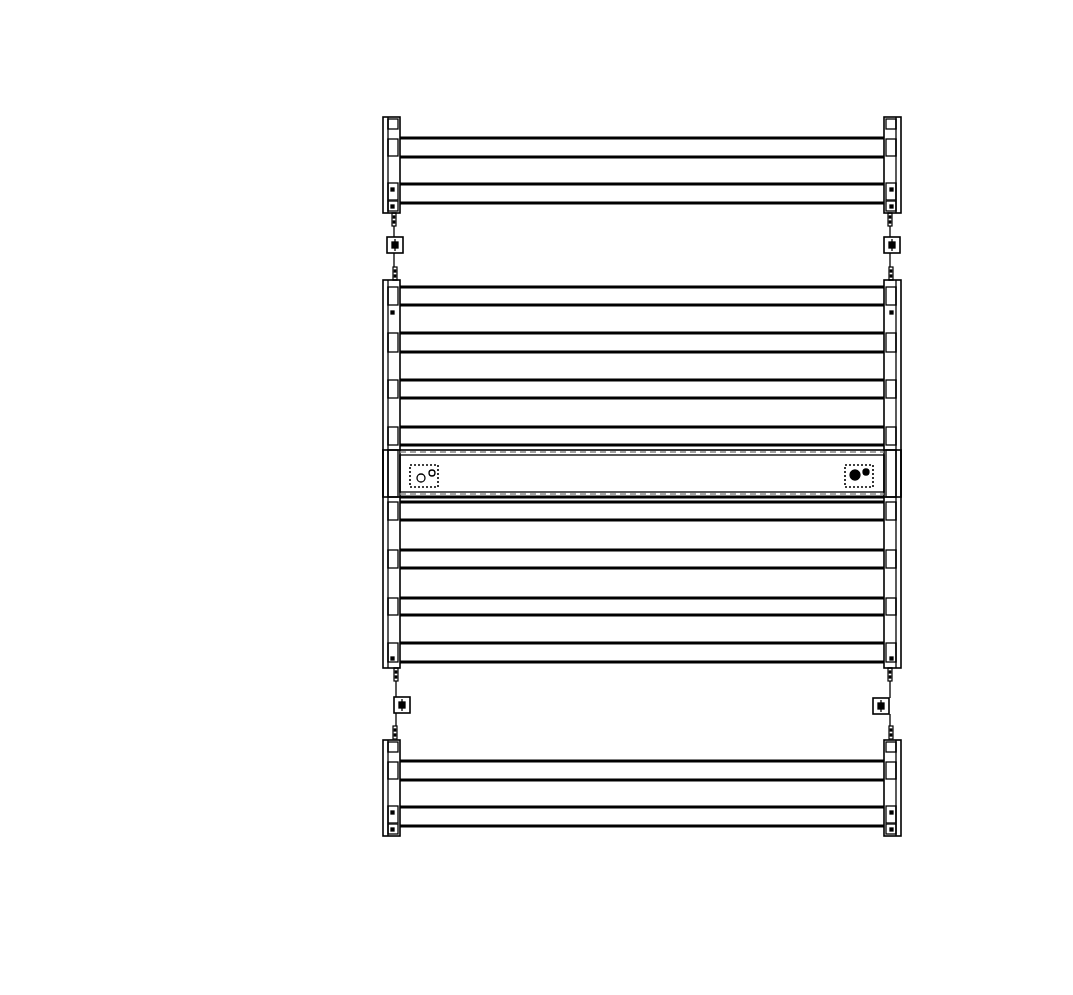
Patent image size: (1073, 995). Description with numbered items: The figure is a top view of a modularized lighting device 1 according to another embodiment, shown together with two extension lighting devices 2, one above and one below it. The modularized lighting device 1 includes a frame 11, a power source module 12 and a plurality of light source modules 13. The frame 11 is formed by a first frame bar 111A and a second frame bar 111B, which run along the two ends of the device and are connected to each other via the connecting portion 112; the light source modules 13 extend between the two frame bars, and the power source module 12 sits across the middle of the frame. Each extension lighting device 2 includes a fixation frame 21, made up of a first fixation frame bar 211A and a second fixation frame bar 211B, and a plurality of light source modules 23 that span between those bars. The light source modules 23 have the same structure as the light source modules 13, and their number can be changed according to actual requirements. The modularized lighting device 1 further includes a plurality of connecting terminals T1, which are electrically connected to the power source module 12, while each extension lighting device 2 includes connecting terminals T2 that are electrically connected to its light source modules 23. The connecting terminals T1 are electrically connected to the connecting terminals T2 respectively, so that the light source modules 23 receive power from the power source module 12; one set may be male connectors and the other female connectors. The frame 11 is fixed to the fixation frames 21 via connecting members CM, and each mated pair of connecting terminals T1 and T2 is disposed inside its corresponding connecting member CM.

The modularized lighting device 1 is at (186, 458).
The extension lighting device 2 is at (186, 208).
The frame 11 is at (350, 365).
The power source module 12 is at (884, 495).
The light source module 13 is at (655, 300).
The fixation frame 21 is at (350, 150).
The light source module 23 is at (680, 138).
The first frame bar 111A is at (398, 582).
The second frame bar 111B is at (897, 628).
The connecting portion 112 is at (888, 462).
The first fixation frame bar 211A is at (388, 128).
The second fixation frame bar 211B is at (898, 128).
The connecting terminal T1 is at (390, 268).
The connecting terminal T2 is at (391, 222).
The connecting member CM is at (403, 245).